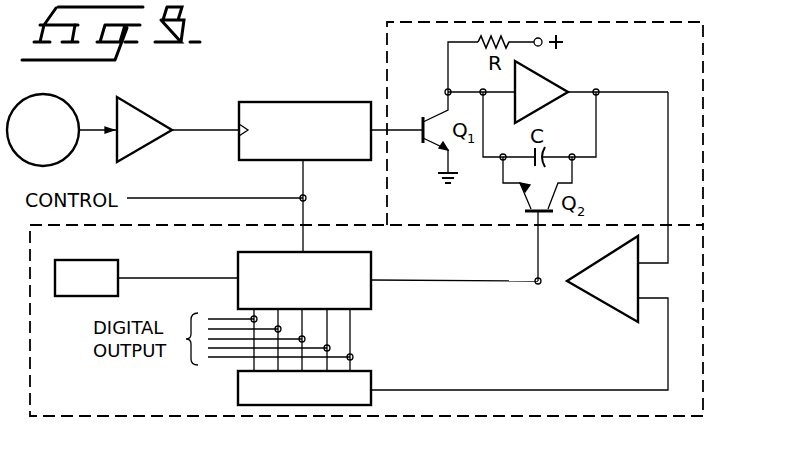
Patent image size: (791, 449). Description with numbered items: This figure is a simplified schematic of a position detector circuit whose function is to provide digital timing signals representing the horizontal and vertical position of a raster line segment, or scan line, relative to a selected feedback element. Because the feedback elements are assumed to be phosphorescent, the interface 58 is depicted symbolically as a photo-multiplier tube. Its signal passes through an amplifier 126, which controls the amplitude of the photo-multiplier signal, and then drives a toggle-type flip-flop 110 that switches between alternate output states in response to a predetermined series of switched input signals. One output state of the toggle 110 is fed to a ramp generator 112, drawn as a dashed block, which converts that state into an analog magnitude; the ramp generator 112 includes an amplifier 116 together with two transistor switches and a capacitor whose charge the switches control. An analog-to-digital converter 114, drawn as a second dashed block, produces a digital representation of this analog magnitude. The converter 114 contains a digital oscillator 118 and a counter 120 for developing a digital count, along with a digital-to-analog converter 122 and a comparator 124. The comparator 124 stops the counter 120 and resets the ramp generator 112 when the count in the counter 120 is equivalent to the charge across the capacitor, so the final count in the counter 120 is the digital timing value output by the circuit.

The interface 58 is at (56, 97).
The amplifier 126 is at (140, 108).
The toggle-type flip-flop 110 is at (282, 101).
The ramp generator 112 is at (703, 82).
The analog-to-digital converter 114 is at (703, 355).
The amplifier 116 is at (541, 73).
The digital oscillator 118 is at (116, 288).
The counter 120 is at (358, 309).
The digital-to-analog converter 122 is at (363, 369).
The comparator 124 is at (618, 311).